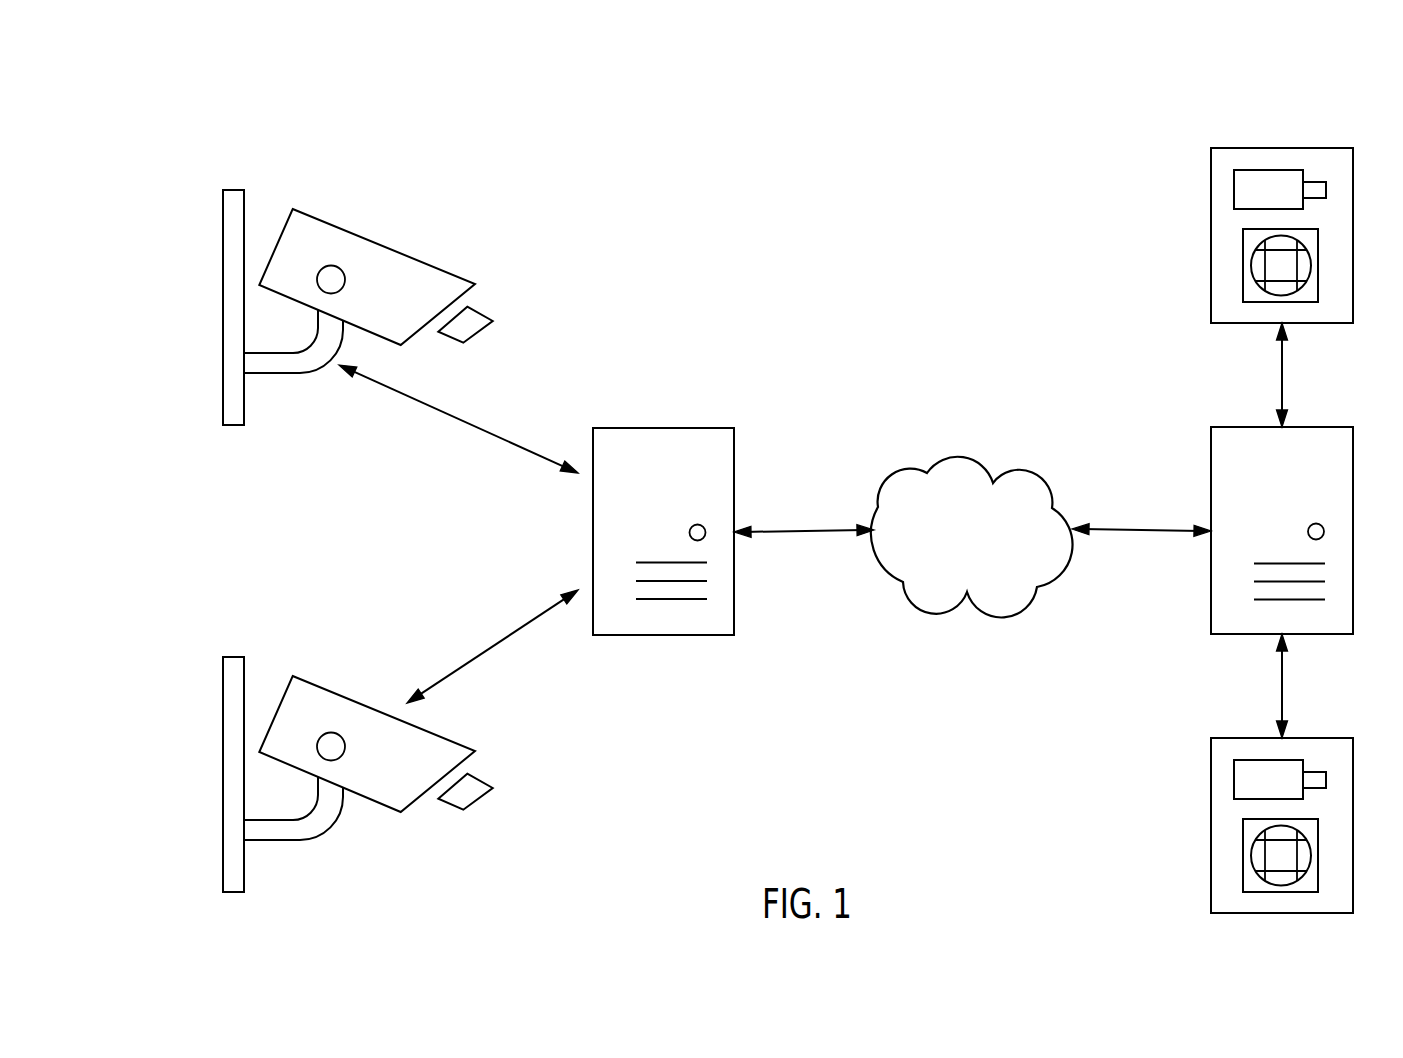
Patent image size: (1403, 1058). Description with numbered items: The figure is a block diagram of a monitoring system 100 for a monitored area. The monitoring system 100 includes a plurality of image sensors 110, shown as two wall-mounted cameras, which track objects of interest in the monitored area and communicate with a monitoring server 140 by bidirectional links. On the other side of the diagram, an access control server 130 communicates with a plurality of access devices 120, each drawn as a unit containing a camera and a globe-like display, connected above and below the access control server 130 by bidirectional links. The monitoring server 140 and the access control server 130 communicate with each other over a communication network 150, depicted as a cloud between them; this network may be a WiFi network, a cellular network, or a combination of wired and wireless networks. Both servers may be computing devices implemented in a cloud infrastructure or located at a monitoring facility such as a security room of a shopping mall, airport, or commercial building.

The monitoring system 100 is at (226, 116).
The image sensors 110 is at (385, 247).
The access devices 120 is at (1211, 237).
The access control server 130 is at (1211, 477).
The monitoring server 140 is at (663, 427).
The communication network 150 is at (881, 486).